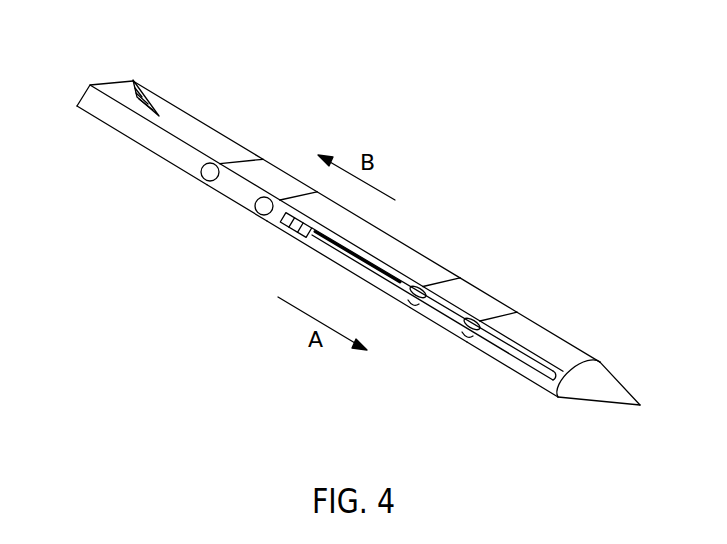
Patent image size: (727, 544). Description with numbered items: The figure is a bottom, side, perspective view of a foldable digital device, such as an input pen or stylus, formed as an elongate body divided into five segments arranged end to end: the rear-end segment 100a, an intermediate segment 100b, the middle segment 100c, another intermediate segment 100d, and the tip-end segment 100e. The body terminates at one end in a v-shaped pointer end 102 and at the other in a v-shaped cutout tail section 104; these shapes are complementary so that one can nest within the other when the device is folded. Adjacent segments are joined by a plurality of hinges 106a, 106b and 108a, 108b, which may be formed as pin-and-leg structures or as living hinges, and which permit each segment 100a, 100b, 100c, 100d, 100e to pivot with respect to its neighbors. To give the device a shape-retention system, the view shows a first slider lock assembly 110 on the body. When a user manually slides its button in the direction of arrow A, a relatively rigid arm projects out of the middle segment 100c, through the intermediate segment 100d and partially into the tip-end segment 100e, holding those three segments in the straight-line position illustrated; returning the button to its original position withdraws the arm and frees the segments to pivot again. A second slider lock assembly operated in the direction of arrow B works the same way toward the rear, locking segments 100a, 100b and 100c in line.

The rear-end segment 100a is at (140, 130).
The intermediate segment 100b is at (283, 180).
The middle segment 100c is at (410, 255).
The intermediate segment 100d is at (483, 297).
The tip-end segment 100e is at (551, 340).
The v-shaped pointer end 102 is at (621, 383).
The v-shaped cutout tail section 104 is at (116, 85).
The hinge 106a is at (202, 178).
The hinge 106b is at (256, 211).
The hinge 108a is at (417, 312).
The hinge 108b is at (470, 343).
The first slider lock assembly 110 is at (281, 228).